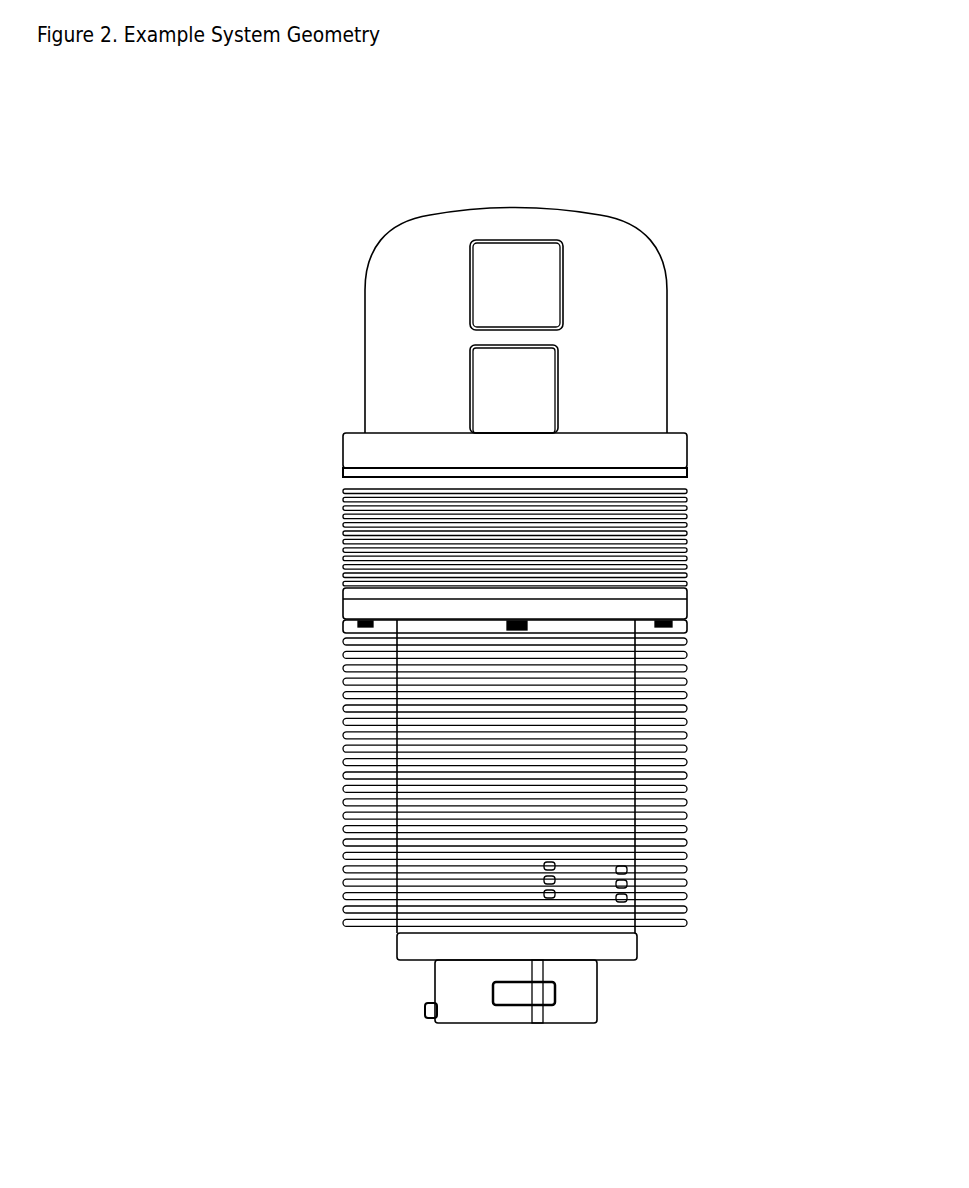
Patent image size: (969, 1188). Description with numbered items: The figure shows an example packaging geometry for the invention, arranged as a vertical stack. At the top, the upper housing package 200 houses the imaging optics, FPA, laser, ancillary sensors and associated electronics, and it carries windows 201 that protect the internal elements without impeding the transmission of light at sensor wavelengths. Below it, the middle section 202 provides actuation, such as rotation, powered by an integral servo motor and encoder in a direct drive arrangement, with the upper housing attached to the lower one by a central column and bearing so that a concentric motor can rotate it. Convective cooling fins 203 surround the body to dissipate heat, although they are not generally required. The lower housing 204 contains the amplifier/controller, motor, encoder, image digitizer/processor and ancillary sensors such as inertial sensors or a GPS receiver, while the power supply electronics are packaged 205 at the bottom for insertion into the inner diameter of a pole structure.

The upper housing package 200 is at (372, 248).
The windows 201 is at (572, 370).
The middle section 202 is at (327, 508).
The convective cooling fins 203 is at (695, 662).
The lower housing 204 is at (325, 848).
The power supply electronics package 205 is at (648, 955).